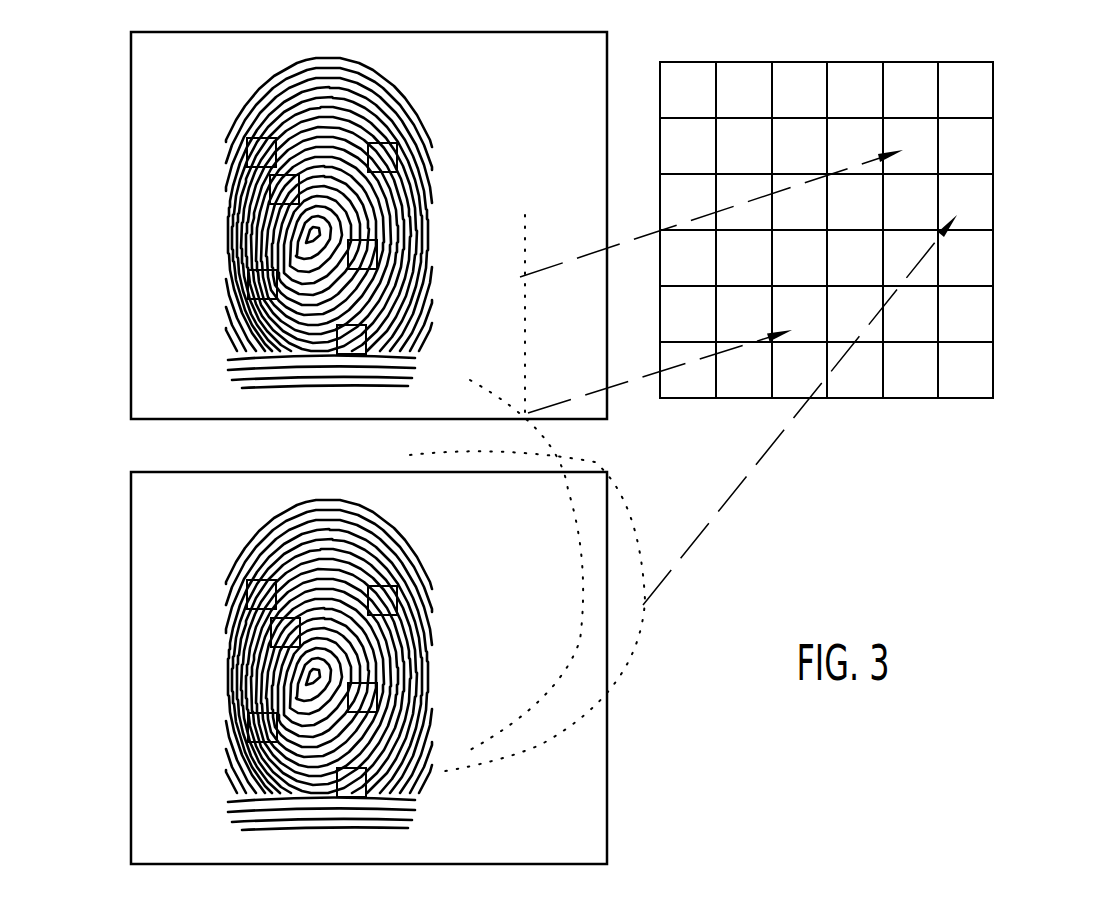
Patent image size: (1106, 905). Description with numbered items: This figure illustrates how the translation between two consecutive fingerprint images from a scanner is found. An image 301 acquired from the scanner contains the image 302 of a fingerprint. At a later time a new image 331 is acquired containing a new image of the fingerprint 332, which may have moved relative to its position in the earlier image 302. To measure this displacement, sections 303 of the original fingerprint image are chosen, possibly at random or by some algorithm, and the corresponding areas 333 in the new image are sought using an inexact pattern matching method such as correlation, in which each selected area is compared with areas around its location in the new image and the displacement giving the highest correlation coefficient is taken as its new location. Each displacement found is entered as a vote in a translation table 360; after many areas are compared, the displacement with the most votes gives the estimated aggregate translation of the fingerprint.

The image 301 is at (381, 32).
The image of a fingerprint 302 is at (275, 77).
The sections of the fingerprint image 303 is at (365, 333).
The new image 331 is at (197, 472).
The new image of the fingerprint 332 is at (225, 575).
The corresponding areas 333 is at (365, 776).
The translation table 360 is at (993, 287).